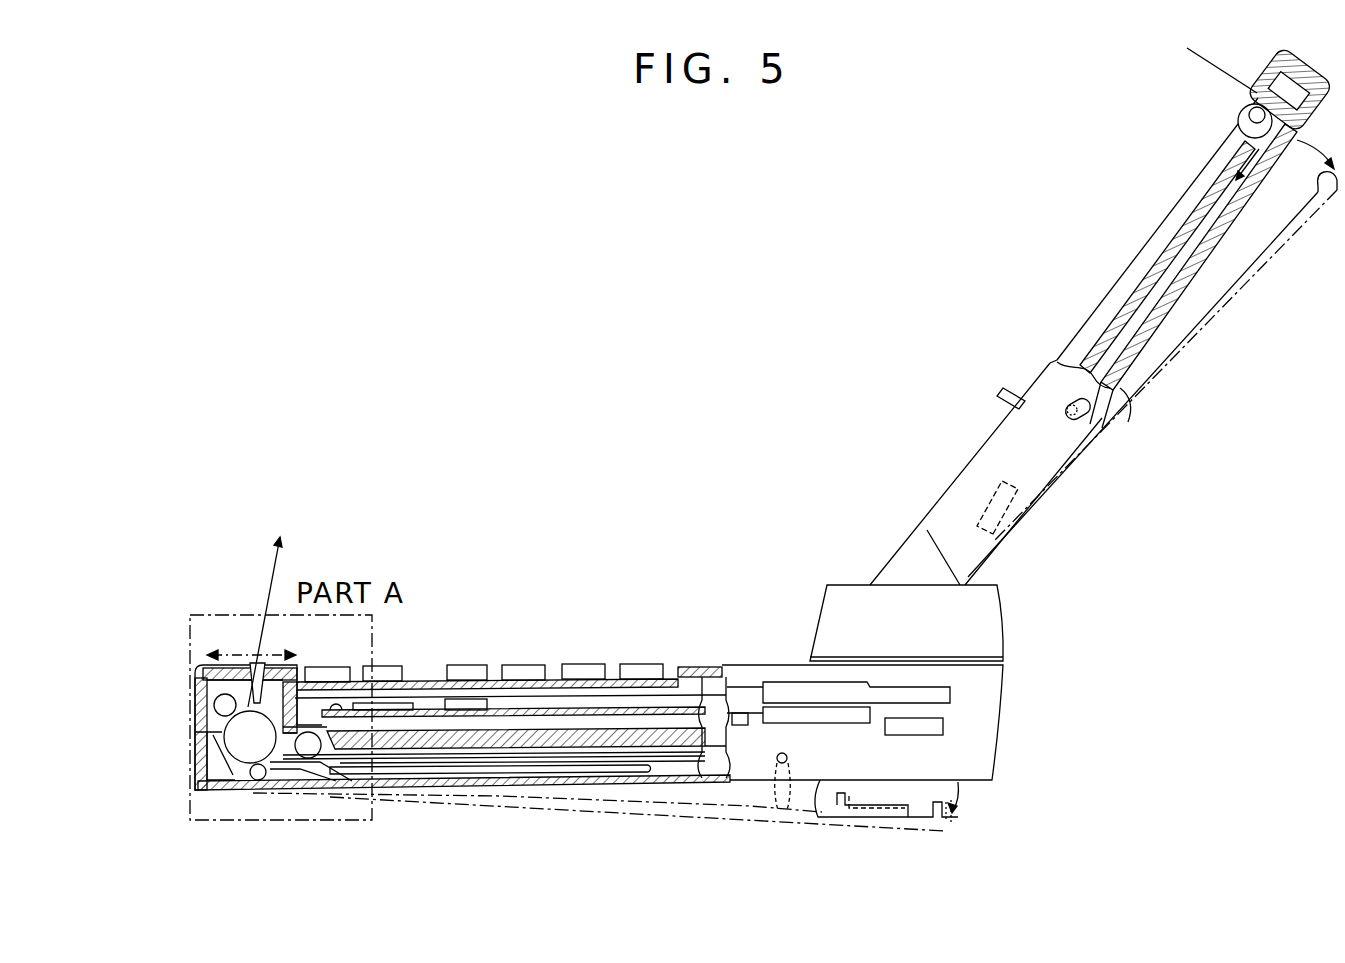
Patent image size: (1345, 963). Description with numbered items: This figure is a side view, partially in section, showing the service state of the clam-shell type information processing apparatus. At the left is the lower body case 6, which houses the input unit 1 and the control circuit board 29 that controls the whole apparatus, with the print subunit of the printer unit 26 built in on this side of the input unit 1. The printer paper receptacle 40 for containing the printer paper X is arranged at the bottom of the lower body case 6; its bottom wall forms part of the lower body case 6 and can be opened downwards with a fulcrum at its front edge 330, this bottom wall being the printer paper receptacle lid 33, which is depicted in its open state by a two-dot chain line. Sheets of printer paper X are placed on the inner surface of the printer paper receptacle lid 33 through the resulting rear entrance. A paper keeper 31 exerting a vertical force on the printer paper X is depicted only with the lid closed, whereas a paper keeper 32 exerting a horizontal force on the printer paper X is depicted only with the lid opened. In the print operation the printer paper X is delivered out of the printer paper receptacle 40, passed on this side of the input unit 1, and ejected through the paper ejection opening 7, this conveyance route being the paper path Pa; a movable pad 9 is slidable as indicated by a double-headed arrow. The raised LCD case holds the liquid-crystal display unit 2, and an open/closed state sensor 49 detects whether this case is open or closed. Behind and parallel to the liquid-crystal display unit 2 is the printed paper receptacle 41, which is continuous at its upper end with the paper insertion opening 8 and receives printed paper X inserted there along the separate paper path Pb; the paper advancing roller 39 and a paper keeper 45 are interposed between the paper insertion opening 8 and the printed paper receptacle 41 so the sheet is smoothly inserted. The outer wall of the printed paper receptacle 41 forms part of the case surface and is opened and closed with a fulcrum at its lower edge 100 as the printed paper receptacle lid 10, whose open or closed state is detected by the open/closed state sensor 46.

The input unit 1 is at (652, 681).
The liquid-crystal display unit 2 is at (1130, 268).
The lower body case 6 is at (990, 755).
The paper ejection opening 7 is at (248, 706).
The paper insertion opening 8 is at (1250, 96).
The movable pad 9 is at (200, 675).
The printed paper receptacle lid 10 is at (1194, 290).
The printer unit 26 is at (222, 802).
The control circuit board 29 is at (702, 700).
The paper keeper 31 is at (475, 772).
The paper keeper 32 is at (888, 800).
The printer paper receptacle lid 33 is at (956, 823).
The paper advancing roller 39 is at (1248, 117).
The printer paper receptacle 40 is at (405, 783).
The printed paper receptacle 41 is at (1125, 395).
The paper keeper 45 is at (1242, 148).
The open/closed state sensor 46 is at (992, 500).
The open/closed state sensor 49 is at (1010, 393).
The lower edge 100 is at (975, 572).
The front edge 330 is at (258, 782).
The paper path Pa is at (283, 600).
The paper path Pb is at (1222, 54).
The printer paper X is at (665, 812).